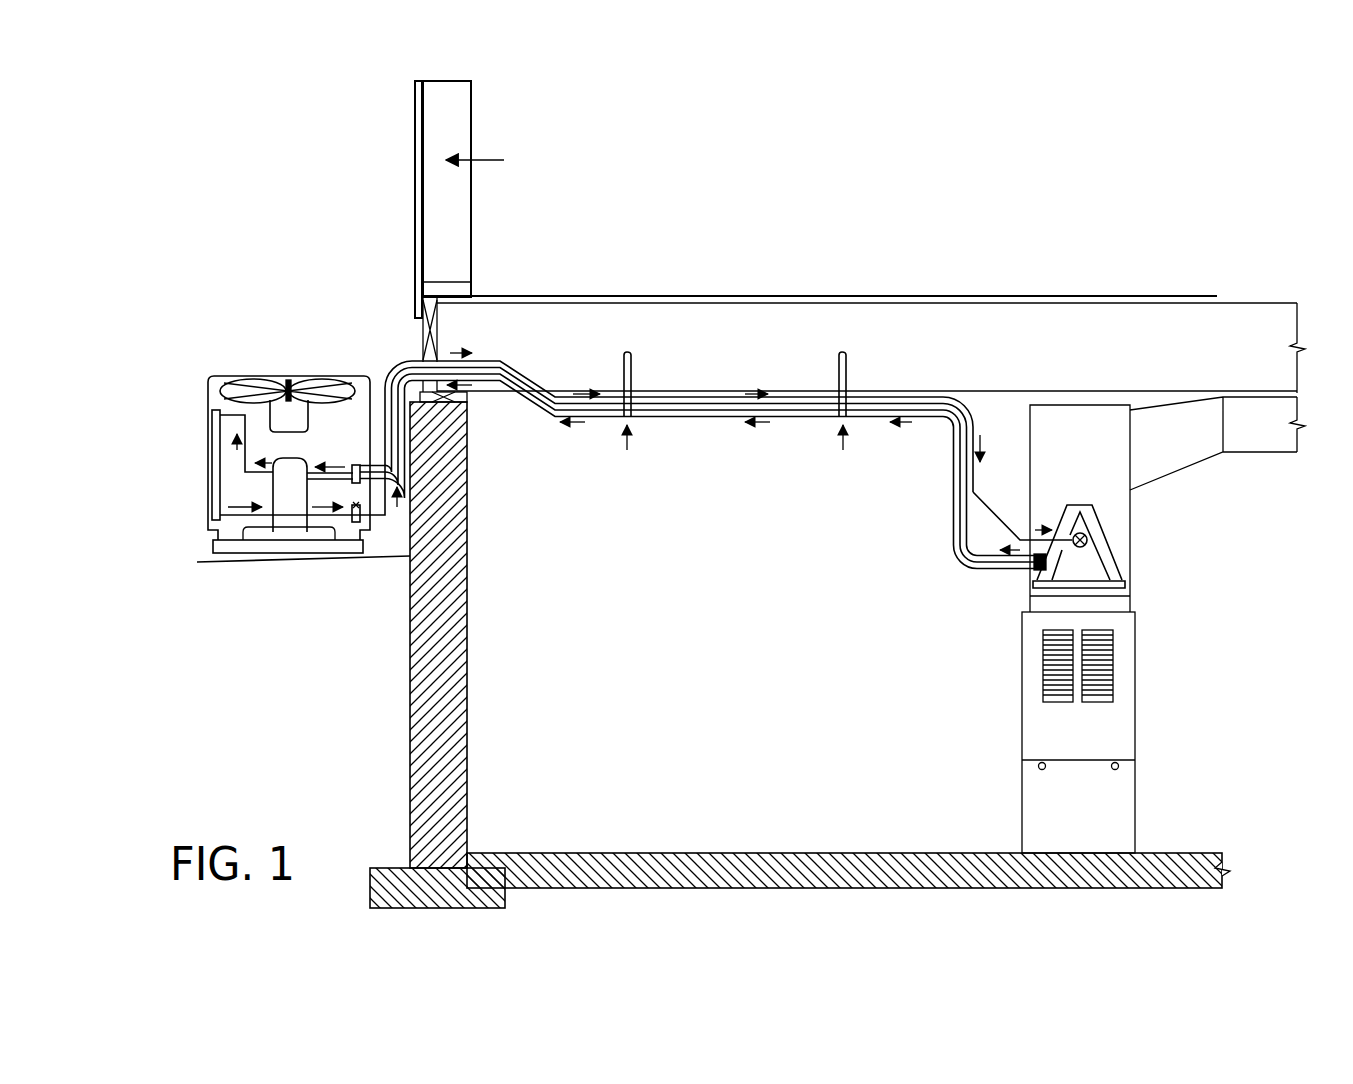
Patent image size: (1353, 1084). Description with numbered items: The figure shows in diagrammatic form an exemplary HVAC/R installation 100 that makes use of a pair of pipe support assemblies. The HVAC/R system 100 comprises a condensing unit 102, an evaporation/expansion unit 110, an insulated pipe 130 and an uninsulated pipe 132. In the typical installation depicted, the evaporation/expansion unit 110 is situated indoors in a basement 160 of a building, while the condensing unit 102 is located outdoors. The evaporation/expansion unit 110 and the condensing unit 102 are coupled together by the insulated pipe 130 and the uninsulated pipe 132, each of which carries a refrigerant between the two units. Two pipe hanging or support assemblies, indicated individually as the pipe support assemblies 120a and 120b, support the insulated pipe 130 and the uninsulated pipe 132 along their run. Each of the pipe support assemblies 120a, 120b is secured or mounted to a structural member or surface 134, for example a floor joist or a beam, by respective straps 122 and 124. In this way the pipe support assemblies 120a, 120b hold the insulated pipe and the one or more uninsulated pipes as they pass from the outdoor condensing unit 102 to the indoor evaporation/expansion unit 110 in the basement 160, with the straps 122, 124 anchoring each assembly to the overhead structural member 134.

The HVAC/R installation 100 is at (1160, 180).
The condensing unit 102 is at (208, 482).
The evaporation/expansion unit 110 is at (1095, 528).
The pipe support assembly 120a is at (677, 418).
The pipe support assembly 120b is at (873, 418).
The strap 122 is at (627, 353).
The strap 124 is at (843, 353).
The insulated pipe 130 is at (1000, 572).
The uninsulated pipe 132 is at (990, 505).
The structural member or surface 134 is at (1172, 364).
The basement 160 is at (791, 773).